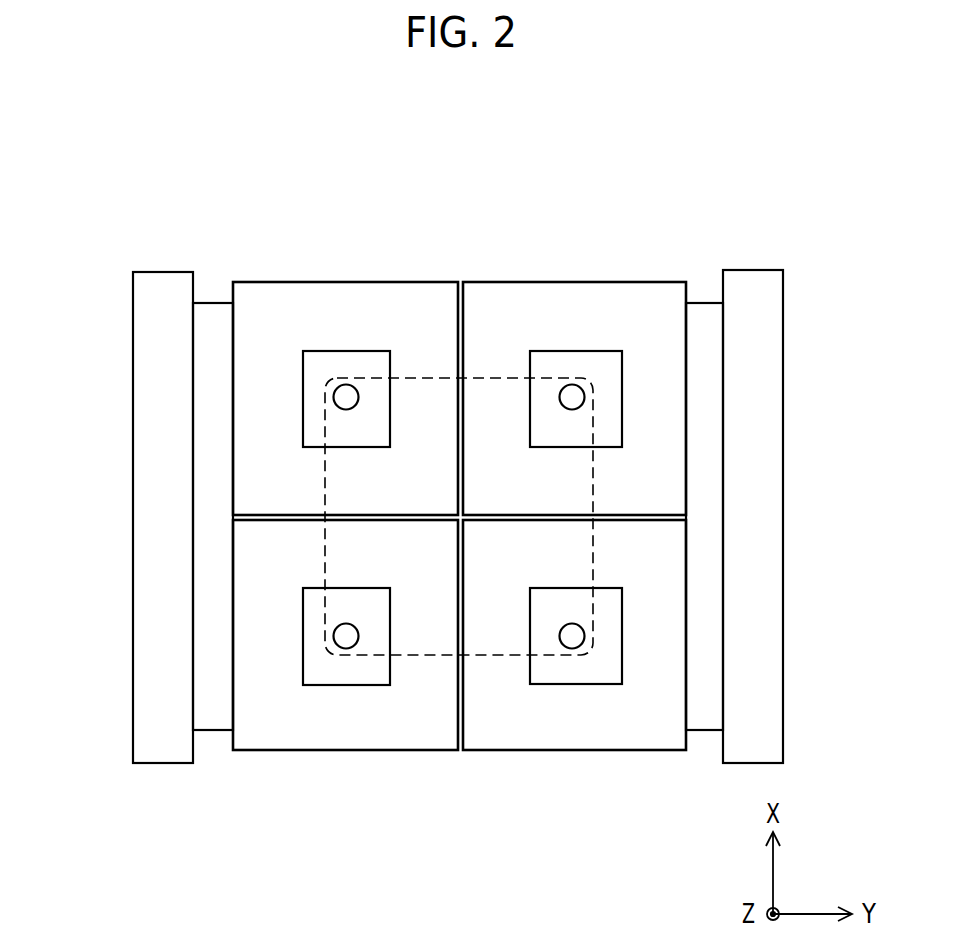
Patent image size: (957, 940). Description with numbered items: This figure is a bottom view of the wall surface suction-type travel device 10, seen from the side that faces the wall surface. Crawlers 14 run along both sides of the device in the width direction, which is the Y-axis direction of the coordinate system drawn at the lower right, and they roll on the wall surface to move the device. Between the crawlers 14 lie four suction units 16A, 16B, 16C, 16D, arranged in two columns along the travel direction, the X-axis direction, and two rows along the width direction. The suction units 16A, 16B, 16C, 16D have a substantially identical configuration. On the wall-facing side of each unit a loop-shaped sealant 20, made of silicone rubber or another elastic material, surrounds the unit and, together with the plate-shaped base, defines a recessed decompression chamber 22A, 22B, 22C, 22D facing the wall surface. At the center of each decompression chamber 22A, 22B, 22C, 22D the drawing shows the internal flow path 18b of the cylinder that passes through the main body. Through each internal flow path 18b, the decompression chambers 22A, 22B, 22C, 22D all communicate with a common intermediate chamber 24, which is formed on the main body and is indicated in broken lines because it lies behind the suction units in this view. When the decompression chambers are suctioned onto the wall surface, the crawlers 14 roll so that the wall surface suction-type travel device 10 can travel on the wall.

The wall surface suction-type travel device 10 is at (107, 230).
The crawlers 14 is at (162, 272).
The suction unit 16A is at (357, 282).
The suction unit 16B is at (348, 751).
The suction unit 16C is at (571, 282).
The suction unit 16D is at (570, 751).
The internal flow path 18b is at (346, 397).
The sealant 20 is at (443, 320).
The decompression chamber 22A is at (320, 358).
The decompression chamber 22B is at (357, 598).
The decompression chamber 22C is at (547, 360).
The decompression chamber 22D is at (547, 598).
The intermediate chamber 24 is at (491, 393).